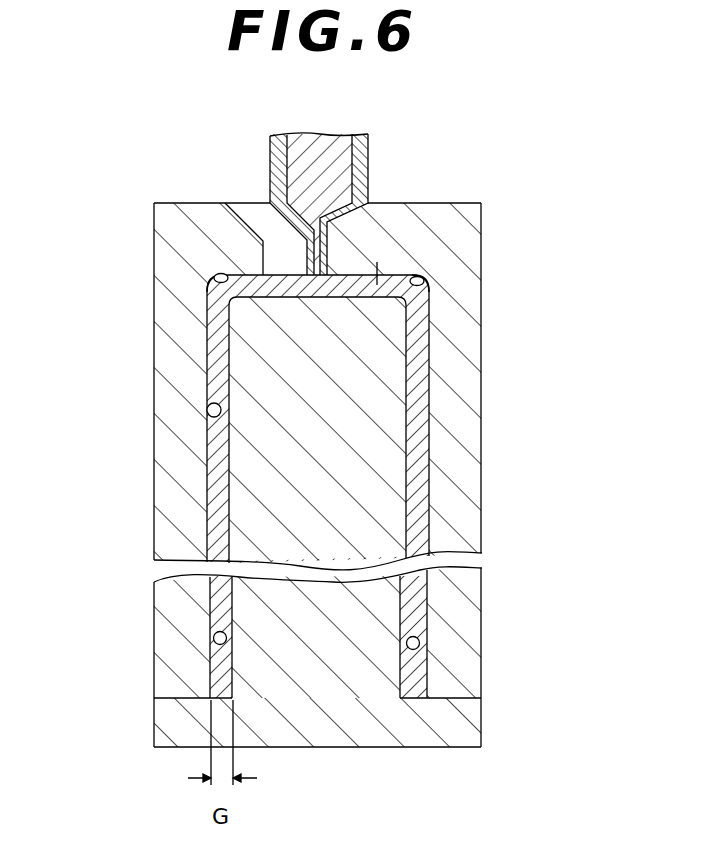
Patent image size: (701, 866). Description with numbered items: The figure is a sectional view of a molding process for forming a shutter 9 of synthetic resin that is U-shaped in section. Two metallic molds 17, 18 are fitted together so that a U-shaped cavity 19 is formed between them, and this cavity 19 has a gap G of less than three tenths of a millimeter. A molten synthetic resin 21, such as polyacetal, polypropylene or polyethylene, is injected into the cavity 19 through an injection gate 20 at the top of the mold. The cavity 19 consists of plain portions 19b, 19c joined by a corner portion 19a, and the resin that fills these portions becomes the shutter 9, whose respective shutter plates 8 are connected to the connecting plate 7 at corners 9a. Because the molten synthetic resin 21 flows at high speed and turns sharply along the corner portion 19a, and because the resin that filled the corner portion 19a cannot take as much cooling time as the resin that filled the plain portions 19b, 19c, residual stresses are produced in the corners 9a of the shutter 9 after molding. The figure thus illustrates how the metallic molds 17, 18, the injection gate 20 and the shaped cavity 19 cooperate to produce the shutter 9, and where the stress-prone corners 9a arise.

The connecting plate 7 is at (395, 352).
The shutter plates 8 is at (422, 347).
The shutter 9 is at (438, 478).
The corners 9a is at (205, 290).
The metallic mold 17 is at (168, 322).
The metallic mold 18 is at (340, 715).
The U-shaped cavity 19 is at (205, 422).
The corner portion of the cavity 19a is at (232, 265).
The plain portion of the cavity 19b is at (210, 636).
The plain portion of the cavity 19c is at (263, 245).
The injection gate 20 is at (338, 258).
The molten synthetic resin 21 is at (378, 275).